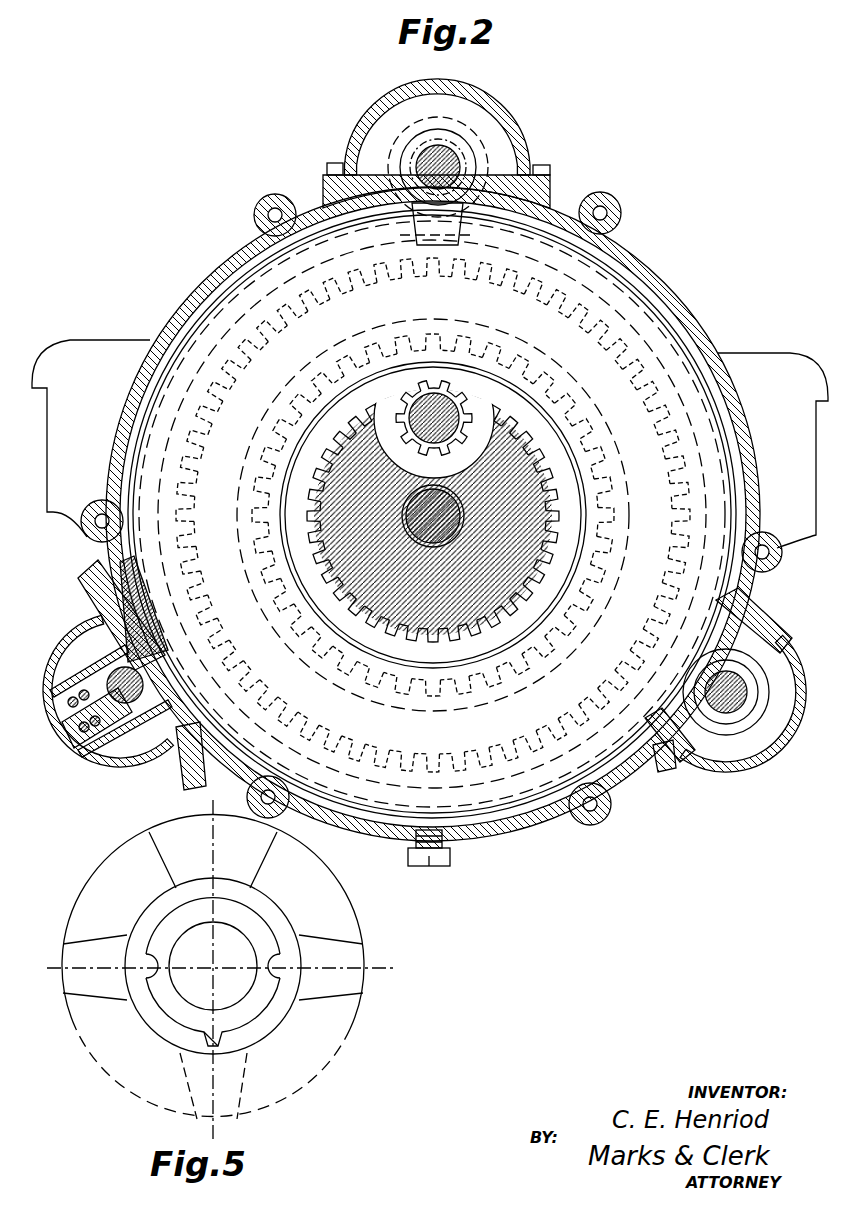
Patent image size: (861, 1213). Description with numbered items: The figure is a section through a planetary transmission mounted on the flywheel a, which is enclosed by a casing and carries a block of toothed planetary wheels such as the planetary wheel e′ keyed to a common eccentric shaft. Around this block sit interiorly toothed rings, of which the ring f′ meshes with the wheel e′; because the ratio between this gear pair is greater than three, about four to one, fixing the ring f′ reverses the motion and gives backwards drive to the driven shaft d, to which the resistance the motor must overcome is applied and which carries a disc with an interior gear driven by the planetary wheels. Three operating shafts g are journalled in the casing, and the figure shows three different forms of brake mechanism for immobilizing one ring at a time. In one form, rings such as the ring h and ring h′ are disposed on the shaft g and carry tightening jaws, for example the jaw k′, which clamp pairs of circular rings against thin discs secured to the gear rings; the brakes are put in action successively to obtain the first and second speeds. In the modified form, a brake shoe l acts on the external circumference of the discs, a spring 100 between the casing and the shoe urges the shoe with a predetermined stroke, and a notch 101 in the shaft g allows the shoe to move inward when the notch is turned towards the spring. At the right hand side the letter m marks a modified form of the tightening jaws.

In FIG. 2, the flywheel a is at (140, 428).
In FIG. 2, the driven shaft d is at (460, 528).
In FIG. 2, the planetary wheel e′ is at (413, 440).
In FIG. 2, the interiorly toothed ring f′ is at (483, 626).
In FIG. 2, the operating shaft g is at (452, 163).
In FIG. 5, the operating shaft g is at (213, 966).
In FIG. 5, the ring h is at (213, 860).
In FIG. 5, the ring h′ is at (353, 950).
In FIG. 2, the tightening jaw k′ is at (455, 228).
In FIG. 5, the tightening jaw k′ is at (82, 988).
In FIG. 2, the brake shoe l is at (193, 730).
In FIG. 2, the tightening jaws m is at (632, 715).
In FIG. 2, the spring 100 is at (85, 742).
In FIG. 2, the notch 101 is at (150, 680).